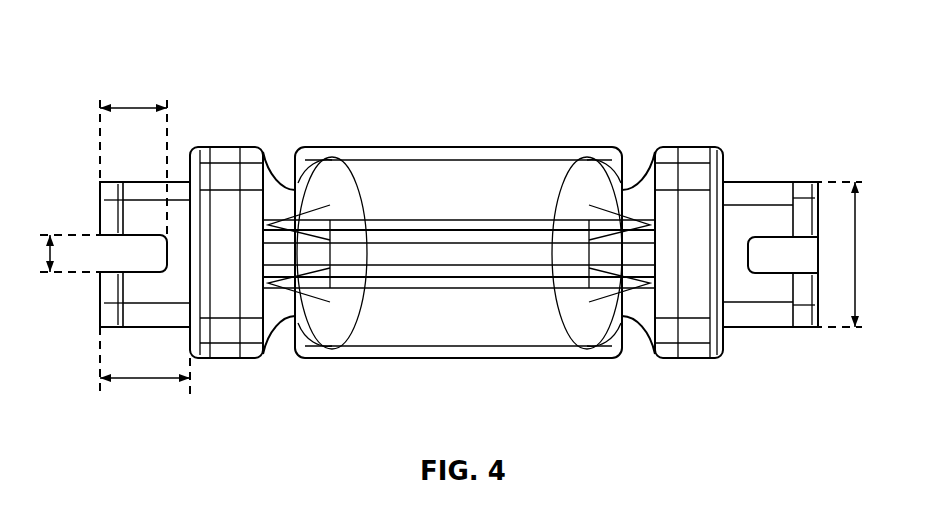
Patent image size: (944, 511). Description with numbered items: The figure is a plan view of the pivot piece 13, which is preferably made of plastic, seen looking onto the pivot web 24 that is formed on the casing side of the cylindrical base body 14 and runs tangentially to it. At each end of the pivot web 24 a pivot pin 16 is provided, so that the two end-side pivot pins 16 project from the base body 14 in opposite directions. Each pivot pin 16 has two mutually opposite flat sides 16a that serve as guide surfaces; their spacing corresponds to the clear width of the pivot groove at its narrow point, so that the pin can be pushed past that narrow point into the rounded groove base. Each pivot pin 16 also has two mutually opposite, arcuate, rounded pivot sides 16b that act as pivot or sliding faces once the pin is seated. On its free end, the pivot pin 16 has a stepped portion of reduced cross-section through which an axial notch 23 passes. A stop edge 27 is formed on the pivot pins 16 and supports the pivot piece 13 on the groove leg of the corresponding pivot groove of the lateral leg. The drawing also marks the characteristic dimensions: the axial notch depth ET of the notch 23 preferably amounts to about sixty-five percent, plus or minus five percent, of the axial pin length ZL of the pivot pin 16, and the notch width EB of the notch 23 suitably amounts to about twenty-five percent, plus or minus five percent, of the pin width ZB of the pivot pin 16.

The pivot piece 13 is at (390, 178).
The cylindrical base body 14 is at (459, 205).
The pivot web 24 is at (478, 247).
The stop edge 27 is at (692, 180).
The pivot pin 16 is at (427, 236).
The flat side 16a is at (145, 283).
The rounded pivot side 16b is at (150, 330).
The axial notch 23 is at (768, 258).
The notch depth ET is at (138, 105).
The notch width EB is at (48, 254).
The axial pin length ZL is at (148, 380).
The pin width ZB is at (858, 252).